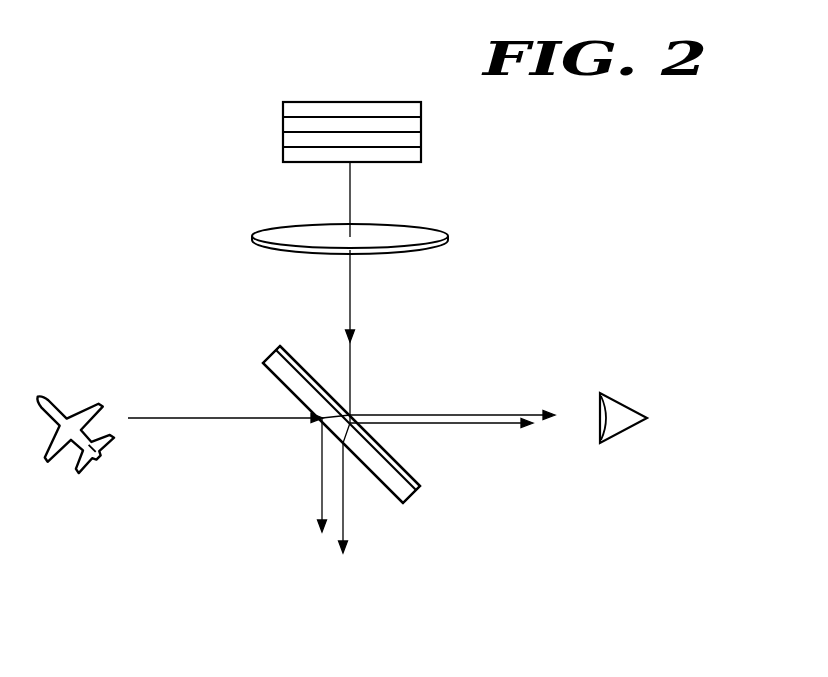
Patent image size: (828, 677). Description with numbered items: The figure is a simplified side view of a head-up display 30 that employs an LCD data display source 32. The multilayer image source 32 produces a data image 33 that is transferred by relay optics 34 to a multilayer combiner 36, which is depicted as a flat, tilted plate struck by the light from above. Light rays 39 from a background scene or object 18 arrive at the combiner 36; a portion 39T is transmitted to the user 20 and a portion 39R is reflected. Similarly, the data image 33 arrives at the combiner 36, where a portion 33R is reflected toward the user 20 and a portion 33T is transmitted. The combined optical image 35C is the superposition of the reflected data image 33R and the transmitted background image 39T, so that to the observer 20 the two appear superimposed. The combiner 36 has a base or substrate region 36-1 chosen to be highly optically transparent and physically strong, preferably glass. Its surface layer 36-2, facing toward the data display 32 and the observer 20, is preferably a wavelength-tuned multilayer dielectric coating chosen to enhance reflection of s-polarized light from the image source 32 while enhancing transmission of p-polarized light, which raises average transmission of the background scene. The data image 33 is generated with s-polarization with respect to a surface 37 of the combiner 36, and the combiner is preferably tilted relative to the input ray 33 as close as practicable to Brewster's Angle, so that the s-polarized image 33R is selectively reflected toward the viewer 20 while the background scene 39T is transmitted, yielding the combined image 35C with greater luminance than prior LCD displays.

The background scene or object 18 is at (46, 395).
The user 20 is at (632, 433).
The head-up display 30 is at (592, 202).
The LCD data display source 32 is at (251, 118).
The data image 33 is at (352, 290).
The reflected data image 33R is at (475, 426).
The transmitted data image portion 33T is at (344, 521).
The relay optics 34 is at (262, 235).
The combined optical image 35C is at (546, 384).
The multilayer combiner 36 is at (248, 337).
The base or substrate region 36-1 is at (405, 501).
The surface layer 36-2 is at (410, 471).
The surface of combiner 37 is at (302, 364).
The light rays from background scene 39 is at (190, 416).
The reflected background light portion 39R is at (320, 485).
The transmitted background image 39T is at (487, 413).